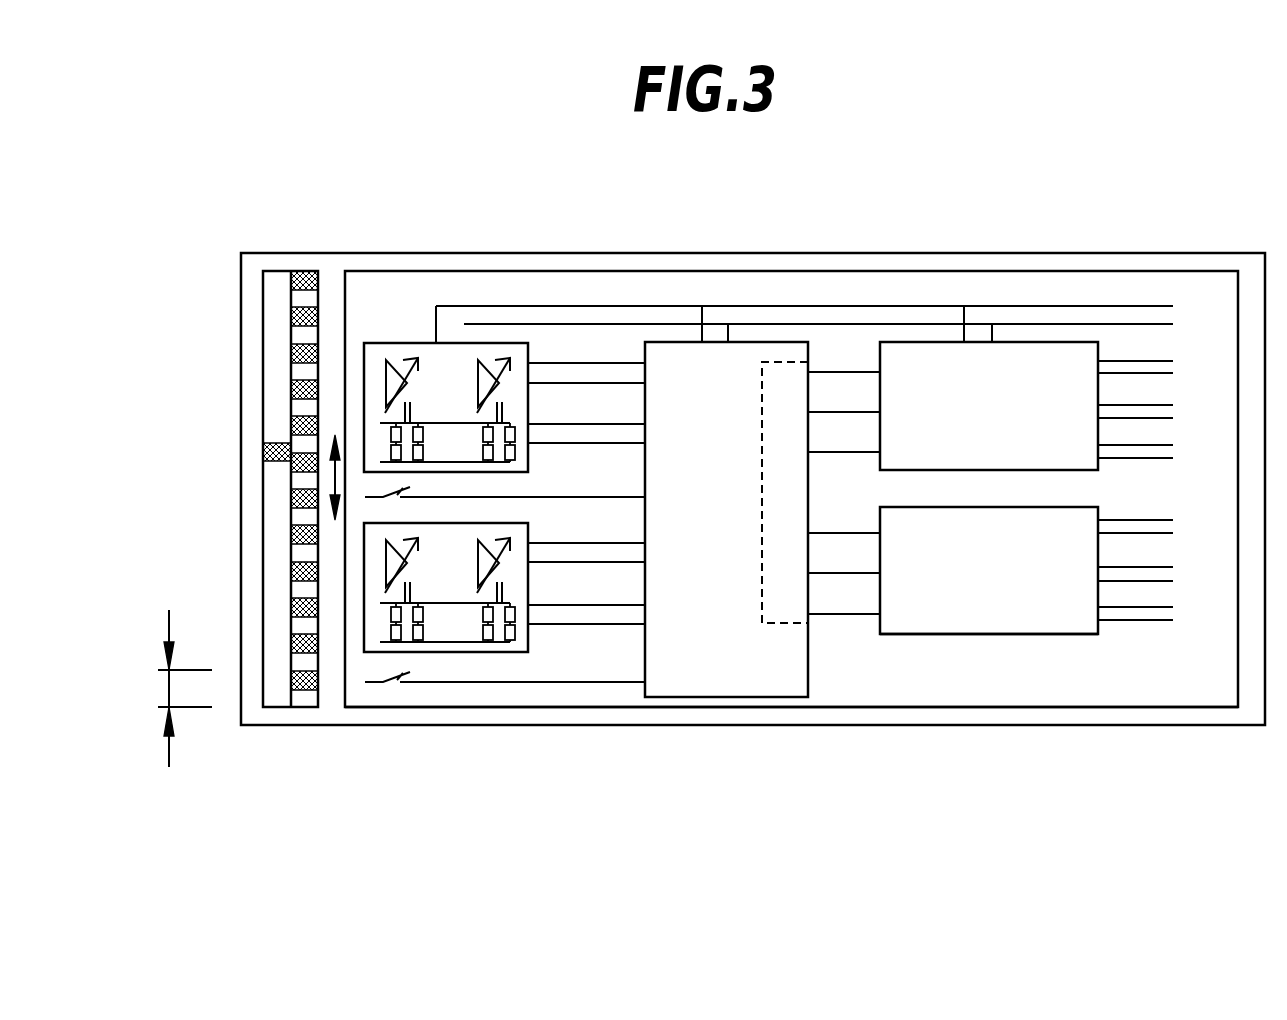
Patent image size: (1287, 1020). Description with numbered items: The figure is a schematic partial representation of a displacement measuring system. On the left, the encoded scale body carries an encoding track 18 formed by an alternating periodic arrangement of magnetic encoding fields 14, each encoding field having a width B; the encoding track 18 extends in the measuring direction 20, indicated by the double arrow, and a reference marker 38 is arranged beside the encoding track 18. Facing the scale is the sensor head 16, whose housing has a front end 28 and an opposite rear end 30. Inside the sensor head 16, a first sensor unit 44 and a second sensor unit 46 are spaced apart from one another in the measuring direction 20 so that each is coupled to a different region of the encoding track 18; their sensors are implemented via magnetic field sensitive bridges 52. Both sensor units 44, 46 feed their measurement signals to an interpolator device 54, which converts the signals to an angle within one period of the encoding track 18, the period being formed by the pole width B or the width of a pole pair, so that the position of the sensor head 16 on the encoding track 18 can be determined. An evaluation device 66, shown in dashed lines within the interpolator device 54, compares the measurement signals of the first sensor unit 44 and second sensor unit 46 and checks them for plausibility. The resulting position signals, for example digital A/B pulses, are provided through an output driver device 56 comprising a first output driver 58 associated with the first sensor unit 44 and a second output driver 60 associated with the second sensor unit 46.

The encoding fields 14 is at (290, 492).
The sensor head 16 is at (777, 290).
The encoding track 18 is at (305, 708).
The measuring direction 20 is at (335, 475).
The front end 28 is at (380, 708).
The rear end 30 is at (373, 271).
The reference marker 38 is at (263, 452).
The first sensor unit 44 is at (367, 555).
The second sensor unit 46 is at (367, 372).
The magnetic field sensitive bridges 52 is at (528, 460).
The interpolator device 54 is at (727, 680).
The output driver device 56 is at (977, 637).
The first output driver 58 is at (1043, 610).
The second output driver 60 is at (1057, 377).
The evaluation device 66 is at (780, 625).
The width B is at (177, 688).